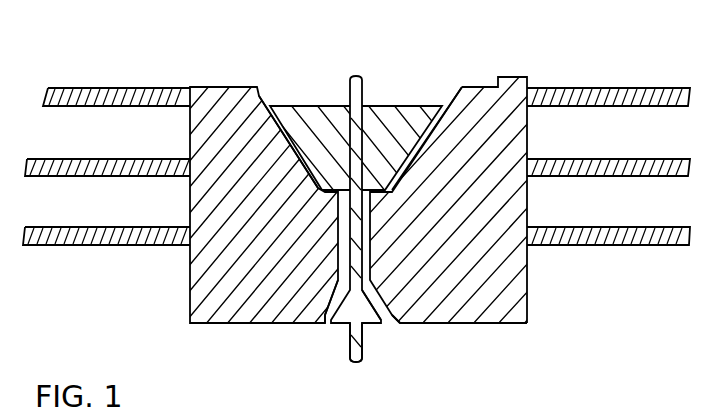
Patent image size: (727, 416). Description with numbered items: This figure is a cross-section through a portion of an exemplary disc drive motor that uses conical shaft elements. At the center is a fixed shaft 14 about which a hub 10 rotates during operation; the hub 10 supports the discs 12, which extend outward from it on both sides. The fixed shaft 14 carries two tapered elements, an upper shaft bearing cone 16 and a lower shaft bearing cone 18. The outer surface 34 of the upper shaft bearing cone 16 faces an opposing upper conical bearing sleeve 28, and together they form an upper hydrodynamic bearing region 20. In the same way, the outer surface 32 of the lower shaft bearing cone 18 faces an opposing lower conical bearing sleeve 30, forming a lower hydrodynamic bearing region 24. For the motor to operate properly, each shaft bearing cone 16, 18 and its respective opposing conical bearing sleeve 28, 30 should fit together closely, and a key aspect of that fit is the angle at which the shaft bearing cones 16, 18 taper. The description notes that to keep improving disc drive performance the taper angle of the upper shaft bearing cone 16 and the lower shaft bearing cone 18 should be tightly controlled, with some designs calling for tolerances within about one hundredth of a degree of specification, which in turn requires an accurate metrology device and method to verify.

The hub 10 is at (358, 214).
The discs 12 is at (657, 87).
The fixed shaft 14 is at (353, 74).
The upper shaft bearing cone 16 is at (303, 106).
The lower shaft bearing cone 18 is at (368, 325).
The upper hydrodynamic bearing region 20 is at (446, 103).
The lower hydrodynamic bearing region 24 is at (324, 313).
The upper conical bearing sleeve 28 is at (260, 90).
The lower conical bearing sleeve 30 is at (397, 320).
The outer surface of the lower shaft bearing cone 32 is at (379, 312).
The outer surface of the upper shaft bearing cone 34 is at (270, 102).